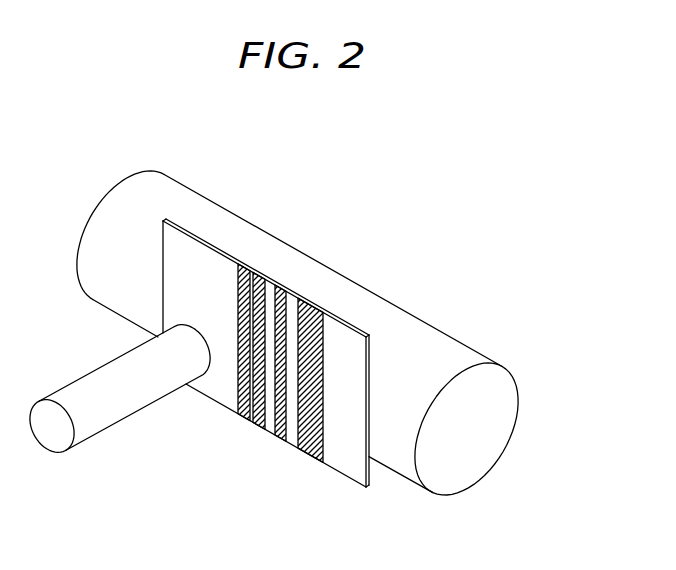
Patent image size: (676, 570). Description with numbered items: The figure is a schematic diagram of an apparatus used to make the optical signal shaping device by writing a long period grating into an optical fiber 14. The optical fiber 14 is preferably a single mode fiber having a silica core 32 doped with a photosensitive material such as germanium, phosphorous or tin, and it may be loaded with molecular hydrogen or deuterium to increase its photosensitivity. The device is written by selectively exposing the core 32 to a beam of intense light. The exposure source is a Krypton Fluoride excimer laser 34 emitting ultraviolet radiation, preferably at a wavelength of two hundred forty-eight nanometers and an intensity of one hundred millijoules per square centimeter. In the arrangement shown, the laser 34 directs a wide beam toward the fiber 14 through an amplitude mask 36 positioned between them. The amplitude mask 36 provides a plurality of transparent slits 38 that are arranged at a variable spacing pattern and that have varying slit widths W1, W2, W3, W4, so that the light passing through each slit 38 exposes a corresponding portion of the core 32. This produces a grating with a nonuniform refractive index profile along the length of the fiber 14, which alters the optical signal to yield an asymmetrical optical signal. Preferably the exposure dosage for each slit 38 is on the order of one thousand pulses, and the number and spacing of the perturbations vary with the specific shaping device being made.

The optical fiber 14 is at (436, 344).
The silica core 32 is at (497, 437).
The excimer laser 34 is at (62, 389).
The amplitude mask 36 is at (197, 260).
The transparent slits 38 is at (311, 308).
The spacing width W1 is at (240, 417).
The spacing width W2 is at (259, 424).
The spacing width W3 is at (280, 287).
The spacing width W4 is at (313, 458).